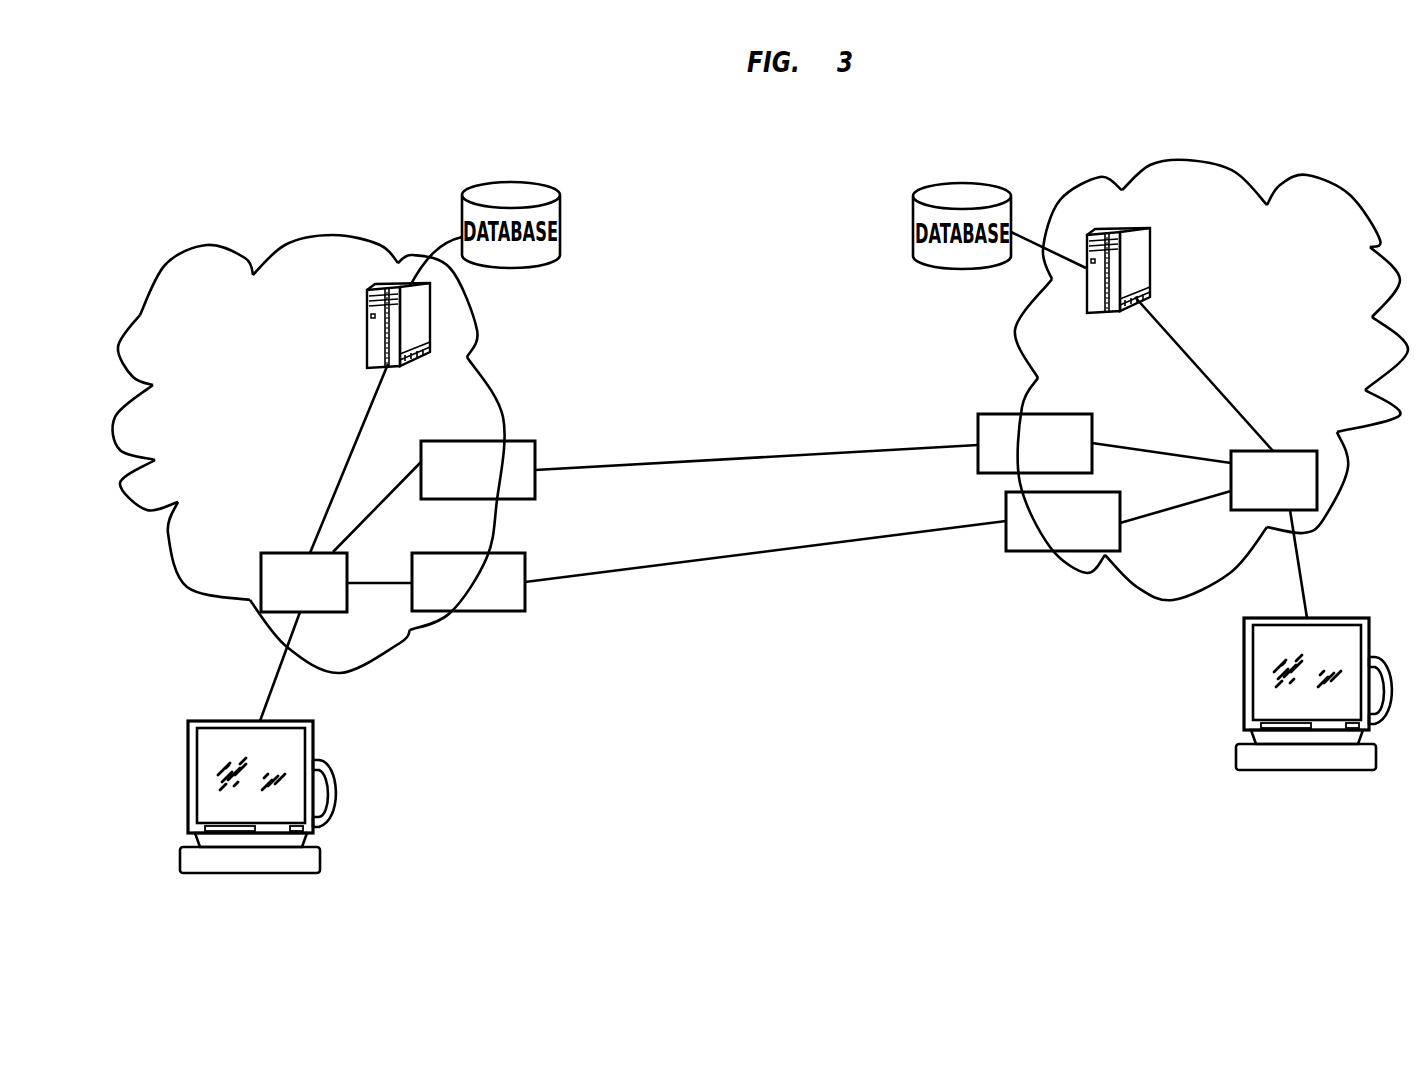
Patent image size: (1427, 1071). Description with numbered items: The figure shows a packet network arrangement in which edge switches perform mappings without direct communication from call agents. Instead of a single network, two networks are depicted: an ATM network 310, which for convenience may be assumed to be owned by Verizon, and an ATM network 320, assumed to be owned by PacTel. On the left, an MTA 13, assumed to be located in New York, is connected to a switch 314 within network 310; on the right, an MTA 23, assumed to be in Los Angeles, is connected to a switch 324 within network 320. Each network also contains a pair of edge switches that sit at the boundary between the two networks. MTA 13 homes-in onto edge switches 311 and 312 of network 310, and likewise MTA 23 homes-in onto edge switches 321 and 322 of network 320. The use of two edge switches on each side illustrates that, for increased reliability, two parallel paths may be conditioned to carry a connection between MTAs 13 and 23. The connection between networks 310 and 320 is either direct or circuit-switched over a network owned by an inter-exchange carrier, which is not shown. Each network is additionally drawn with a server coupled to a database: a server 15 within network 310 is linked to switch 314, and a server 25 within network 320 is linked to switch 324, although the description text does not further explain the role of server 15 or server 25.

The ATM network 310 is at (288, 240).
The ATM network 320 is at (1350, 193).
The server 15 is at (366, 326).
The server 25 is at (1152, 268).
The MTA 13 is at (201, 720).
The MTA 23 is at (1366, 618).
The switch 314 is at (274, 553).
The switch 324 is at (1293, 451).
The edge switch 311 is at (530, 612).
The edge switch 312 is at (534, 441).
The edge switch 321 is at (1012, 553).
The edge switch 322 is at (980, 413).